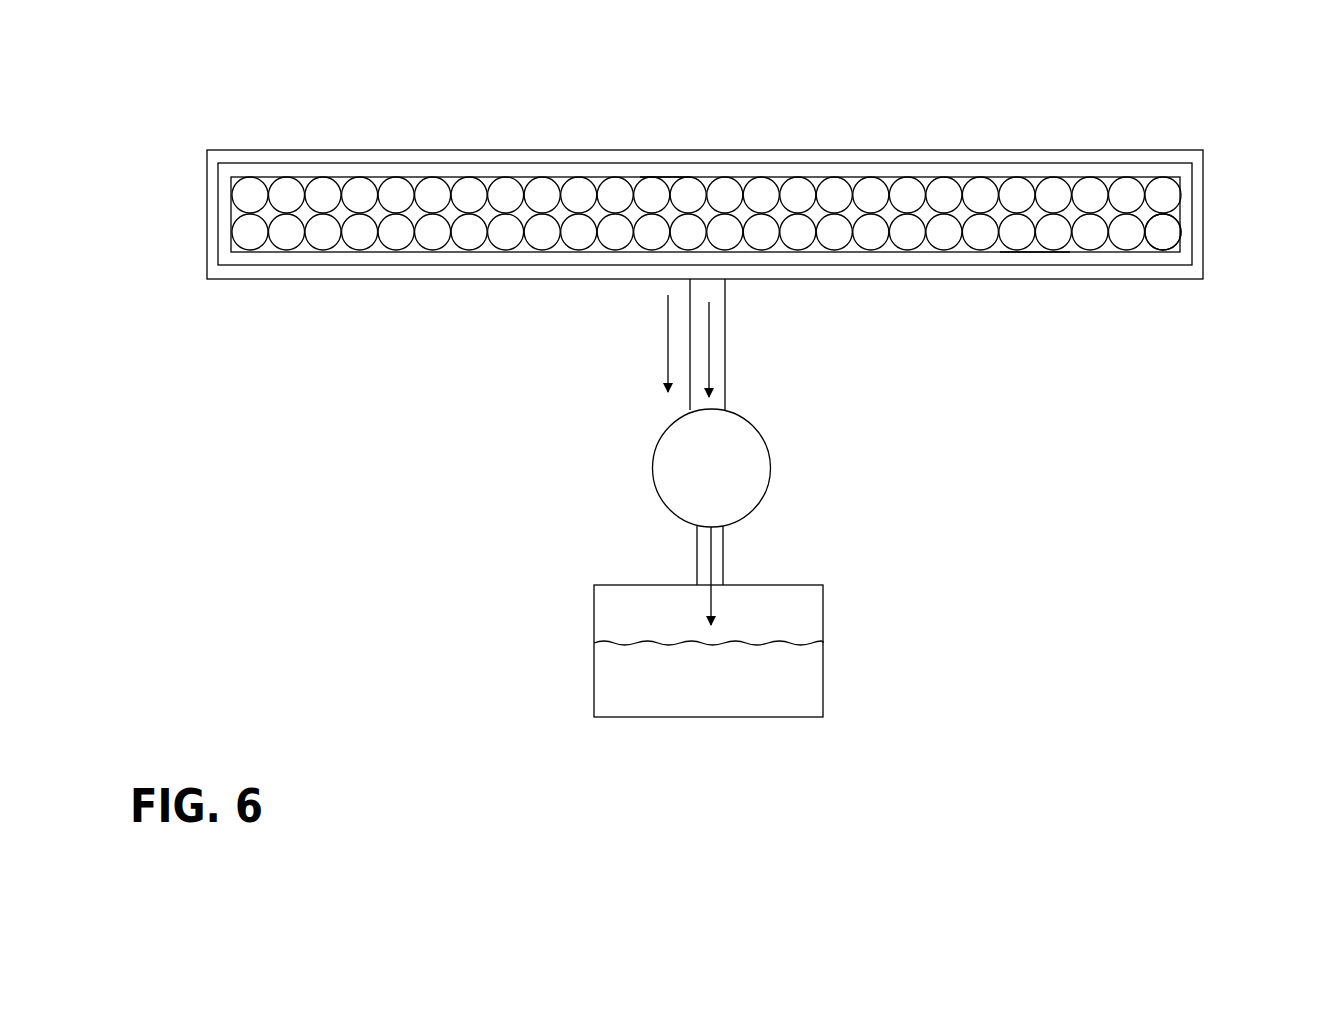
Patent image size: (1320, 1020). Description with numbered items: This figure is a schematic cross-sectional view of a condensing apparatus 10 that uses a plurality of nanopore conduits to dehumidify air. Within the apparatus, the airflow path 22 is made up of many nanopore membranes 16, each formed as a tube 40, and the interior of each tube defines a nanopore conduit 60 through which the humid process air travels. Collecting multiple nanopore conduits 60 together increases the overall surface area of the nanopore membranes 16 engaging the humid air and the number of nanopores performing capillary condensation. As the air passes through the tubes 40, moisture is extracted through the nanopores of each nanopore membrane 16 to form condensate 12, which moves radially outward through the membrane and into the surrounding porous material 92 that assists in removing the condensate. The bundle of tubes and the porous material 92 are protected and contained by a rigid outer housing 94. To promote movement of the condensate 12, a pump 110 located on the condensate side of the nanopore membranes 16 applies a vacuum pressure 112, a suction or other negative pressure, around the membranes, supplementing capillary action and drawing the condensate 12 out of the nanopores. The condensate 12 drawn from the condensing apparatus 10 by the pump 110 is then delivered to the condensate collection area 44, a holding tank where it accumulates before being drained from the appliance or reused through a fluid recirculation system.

The condensing apparatus 10 is at (975, 128).
The airflow path 22 is at (390, 180).
The tube 40 is at (665, 180).
The nanopore conduit 60 is at (1160, 233).
The porous material 92 is at (225, 231).
The rigid outer housing 94 is at (274, 270).
The nanopore membrane 16 is at (1035, 252).
The condensate 12 is at (710, 348).
The vacuum pressure 112 is at (667, 338).
The pump 110 is at (771, 455).
The condensate collection area 44 is at (617, 667).